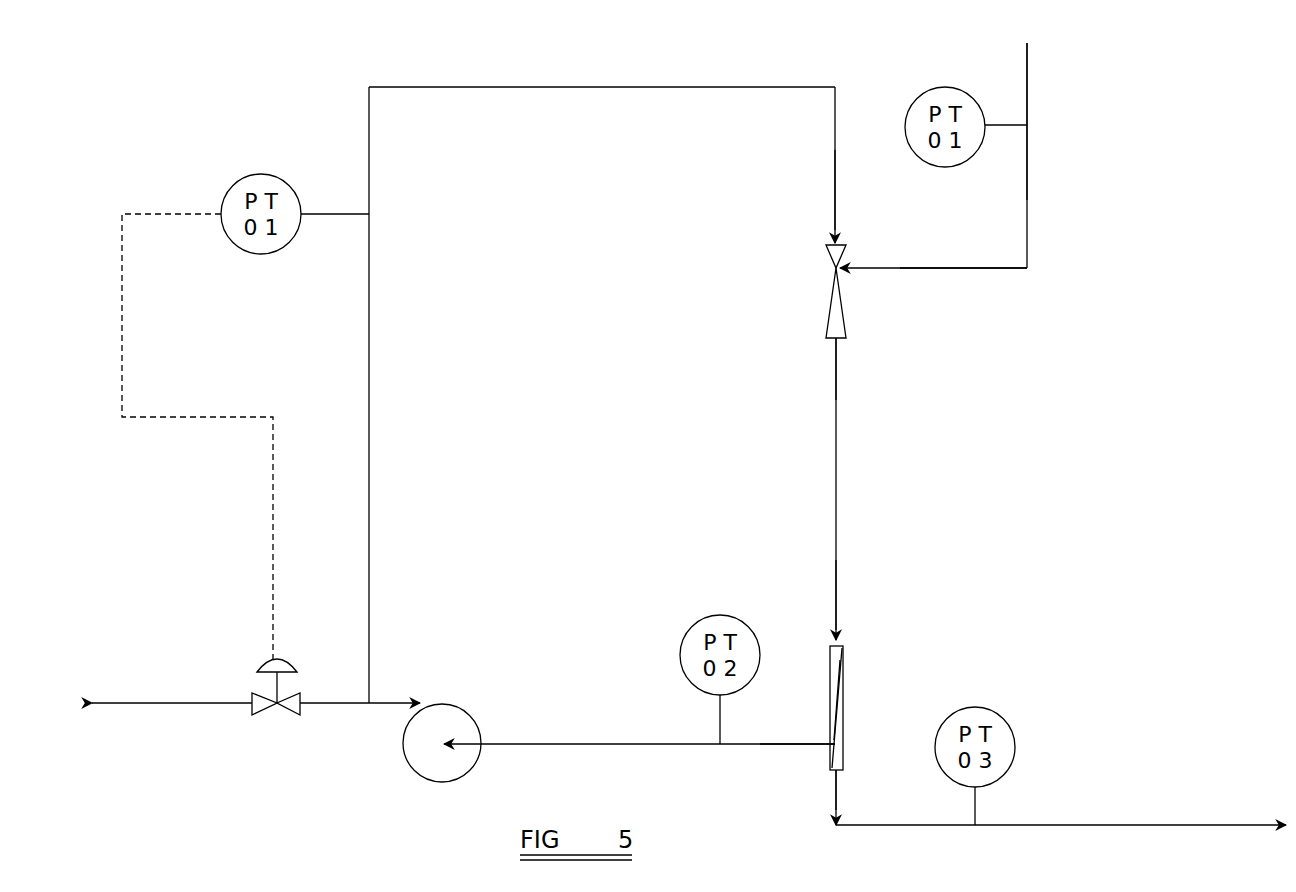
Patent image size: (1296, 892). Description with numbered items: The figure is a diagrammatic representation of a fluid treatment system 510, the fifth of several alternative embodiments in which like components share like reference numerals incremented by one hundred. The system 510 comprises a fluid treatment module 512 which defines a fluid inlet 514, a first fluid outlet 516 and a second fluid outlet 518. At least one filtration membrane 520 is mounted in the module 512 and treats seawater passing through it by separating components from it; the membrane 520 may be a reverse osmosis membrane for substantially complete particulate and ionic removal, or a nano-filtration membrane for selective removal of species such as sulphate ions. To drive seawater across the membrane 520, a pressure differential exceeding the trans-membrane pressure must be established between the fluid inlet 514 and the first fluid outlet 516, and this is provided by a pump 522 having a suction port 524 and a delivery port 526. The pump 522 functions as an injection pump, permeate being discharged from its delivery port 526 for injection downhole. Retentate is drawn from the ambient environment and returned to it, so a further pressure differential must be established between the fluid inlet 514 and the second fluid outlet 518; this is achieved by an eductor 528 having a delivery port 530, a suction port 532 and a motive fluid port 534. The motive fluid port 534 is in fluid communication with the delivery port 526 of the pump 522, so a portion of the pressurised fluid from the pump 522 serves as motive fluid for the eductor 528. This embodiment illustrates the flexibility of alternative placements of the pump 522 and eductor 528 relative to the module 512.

The fluid treatment system 510 is at (1122, 458).
The fluid treatment module 512 is at (828, 655).
The fluid inlet 514 is at (843, 648).
The first fluid outlet 516 is at (838, 775).
The second fluid outlet 518 is at (830, 748).
The filtration membrane 520 is at (838, 708).
The pump 522 is at (407, 752).
The suction port 524 is at (481, 743).
The delivery port 526 is at (416, 702).
The eductor 528 is at (828, 312).
The delivery port 530 is at (838, 345).
The suction port 532 is at (841, 275).
The motive fluid port 534 is at (833, 243).